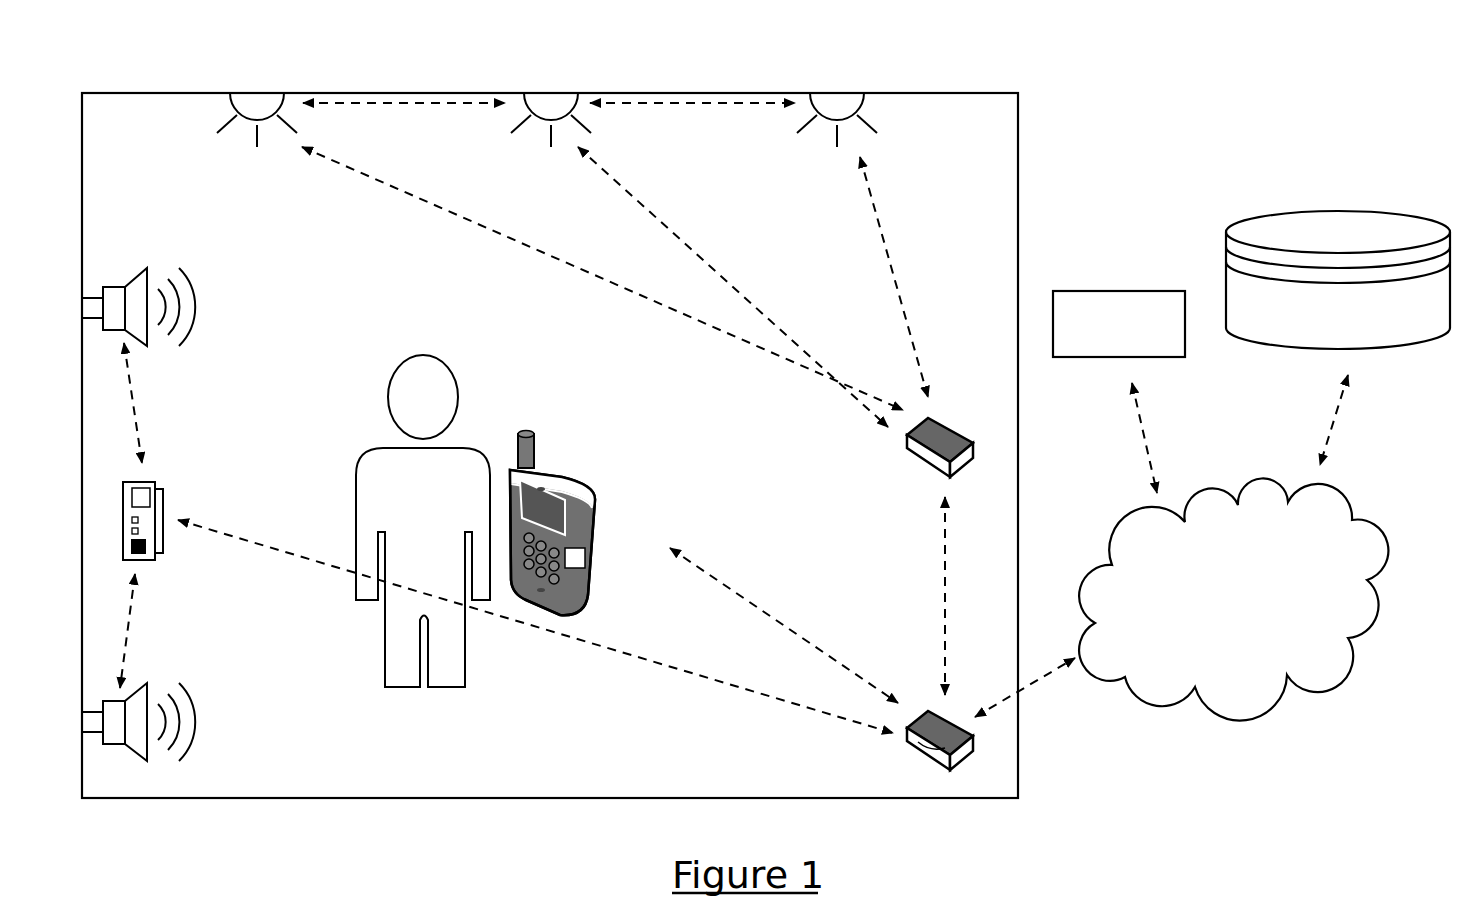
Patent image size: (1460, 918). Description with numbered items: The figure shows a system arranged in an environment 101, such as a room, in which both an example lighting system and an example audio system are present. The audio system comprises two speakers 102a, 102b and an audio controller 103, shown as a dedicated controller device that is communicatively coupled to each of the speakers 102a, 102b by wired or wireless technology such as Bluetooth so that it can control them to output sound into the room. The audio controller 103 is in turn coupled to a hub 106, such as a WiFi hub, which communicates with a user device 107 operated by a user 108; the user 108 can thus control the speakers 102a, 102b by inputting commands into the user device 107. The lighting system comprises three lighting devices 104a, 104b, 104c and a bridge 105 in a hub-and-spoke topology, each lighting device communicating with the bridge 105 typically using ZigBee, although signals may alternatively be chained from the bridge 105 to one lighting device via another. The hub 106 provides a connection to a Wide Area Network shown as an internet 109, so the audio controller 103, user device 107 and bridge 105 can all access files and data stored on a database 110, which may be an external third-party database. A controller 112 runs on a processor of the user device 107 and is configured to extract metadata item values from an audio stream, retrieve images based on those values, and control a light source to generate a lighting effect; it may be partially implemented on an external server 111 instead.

The environment 101 is at (1018, 114).
The speaker 102a is at (130, 281).
The speaker 102b is at (145, 683).
The audio controller 103 is at (153, 481).
The lighting device 104a is at (258, 93).
The lighting device 104b is at (548, 93).
The lighting device 104c is at (838, 93).
The bridge 105 is at (925, 462).
The hub 106 is at (920, 757).
The user device 107 is at (576, 507).
The user 108 is at (462, 448).
The internet 109 is at (1233, 599).
The database 110 is at (1338, 280).
The server 111 is at (1119, 324).
The controller 112 is at (585, 546).